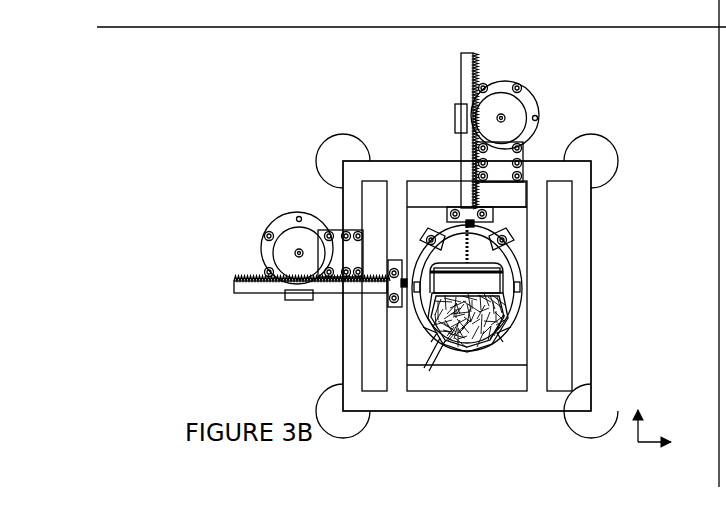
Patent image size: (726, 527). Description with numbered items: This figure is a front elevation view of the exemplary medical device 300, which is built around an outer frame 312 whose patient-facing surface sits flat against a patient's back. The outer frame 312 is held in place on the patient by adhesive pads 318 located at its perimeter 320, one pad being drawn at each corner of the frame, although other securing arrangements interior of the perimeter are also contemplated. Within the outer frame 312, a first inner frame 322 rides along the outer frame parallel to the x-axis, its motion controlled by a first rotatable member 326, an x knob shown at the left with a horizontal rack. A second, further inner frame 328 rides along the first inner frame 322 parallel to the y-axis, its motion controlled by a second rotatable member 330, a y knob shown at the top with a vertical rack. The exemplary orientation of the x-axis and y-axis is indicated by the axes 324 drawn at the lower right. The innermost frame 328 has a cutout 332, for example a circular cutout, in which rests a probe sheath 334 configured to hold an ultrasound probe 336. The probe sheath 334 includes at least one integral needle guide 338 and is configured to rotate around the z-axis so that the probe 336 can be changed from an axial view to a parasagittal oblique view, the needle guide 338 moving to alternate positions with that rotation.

The exemplary device 300 is at (256, 179).
The outer frame 312 is at (583, 233).
The adhesive pads 318 is at (339, 147).
The perimeter 320 is at (603, 195).
The first inner frame 322 is at (425, 170).
The x-axis and y-axis 324 is at (650, 426).
The first rotatable member 326 is at (264, 224).
The second inner frame 328 is at (437, 208).
The second rotatable member 330 is at (540, 91).
The cutout 332 is at (415, 304).
The probe sheath 334 is at (499, 259).
The ultrasound probe 336 is at (495, 313).
The needle guide 338 is at (438, 364).